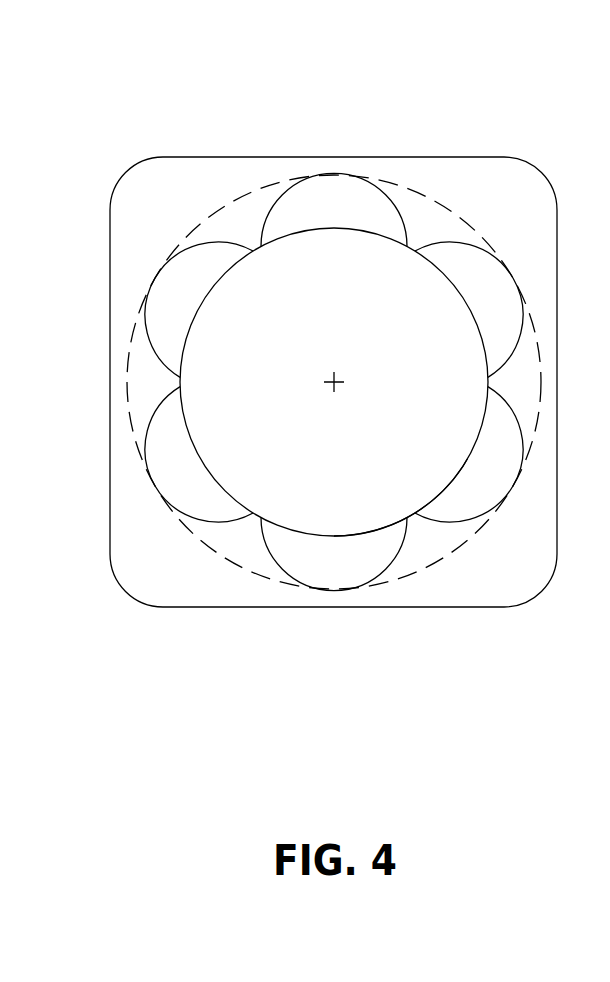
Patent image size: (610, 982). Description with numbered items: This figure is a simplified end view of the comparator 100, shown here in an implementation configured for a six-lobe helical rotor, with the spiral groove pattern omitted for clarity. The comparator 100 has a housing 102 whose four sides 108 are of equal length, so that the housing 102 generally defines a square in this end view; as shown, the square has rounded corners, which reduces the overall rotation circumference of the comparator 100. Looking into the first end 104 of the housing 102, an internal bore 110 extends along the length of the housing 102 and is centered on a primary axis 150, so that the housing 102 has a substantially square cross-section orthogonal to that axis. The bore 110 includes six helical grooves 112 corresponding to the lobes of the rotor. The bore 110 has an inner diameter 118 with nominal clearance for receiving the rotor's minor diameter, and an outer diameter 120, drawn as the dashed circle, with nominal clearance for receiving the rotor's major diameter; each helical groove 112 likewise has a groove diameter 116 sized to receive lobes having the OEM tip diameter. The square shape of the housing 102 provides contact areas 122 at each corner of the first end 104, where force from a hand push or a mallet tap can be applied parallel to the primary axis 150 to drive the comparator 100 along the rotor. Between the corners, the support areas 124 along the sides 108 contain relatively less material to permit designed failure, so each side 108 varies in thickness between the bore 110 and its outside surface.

The comparator 100 is at (175, 130).
The housing 102 is at (225, 607).
The first end 104 is at (127, 508).
The sides 108 is at (267, 157).
The internal bore 110 is at (388, 411).
The helical grooves 112 is at (318, 219).
The groove diameter 116 is at (386, 199).
The inner diameter 118 is at (370, 531).
The outer diameter 120 is at (130, 350).
The contact areas 122 is at (155, 606).
The support areas 124 is at (321, 157).
The primary axis 150 is at (328, 378).